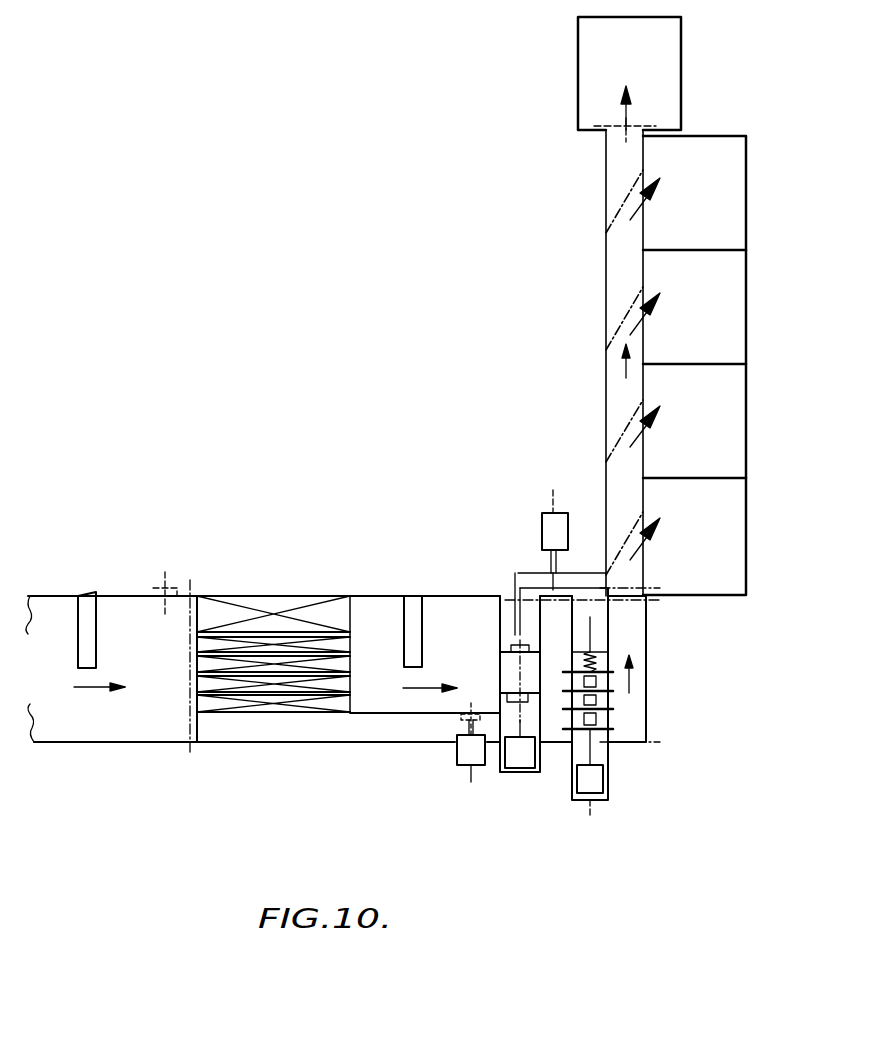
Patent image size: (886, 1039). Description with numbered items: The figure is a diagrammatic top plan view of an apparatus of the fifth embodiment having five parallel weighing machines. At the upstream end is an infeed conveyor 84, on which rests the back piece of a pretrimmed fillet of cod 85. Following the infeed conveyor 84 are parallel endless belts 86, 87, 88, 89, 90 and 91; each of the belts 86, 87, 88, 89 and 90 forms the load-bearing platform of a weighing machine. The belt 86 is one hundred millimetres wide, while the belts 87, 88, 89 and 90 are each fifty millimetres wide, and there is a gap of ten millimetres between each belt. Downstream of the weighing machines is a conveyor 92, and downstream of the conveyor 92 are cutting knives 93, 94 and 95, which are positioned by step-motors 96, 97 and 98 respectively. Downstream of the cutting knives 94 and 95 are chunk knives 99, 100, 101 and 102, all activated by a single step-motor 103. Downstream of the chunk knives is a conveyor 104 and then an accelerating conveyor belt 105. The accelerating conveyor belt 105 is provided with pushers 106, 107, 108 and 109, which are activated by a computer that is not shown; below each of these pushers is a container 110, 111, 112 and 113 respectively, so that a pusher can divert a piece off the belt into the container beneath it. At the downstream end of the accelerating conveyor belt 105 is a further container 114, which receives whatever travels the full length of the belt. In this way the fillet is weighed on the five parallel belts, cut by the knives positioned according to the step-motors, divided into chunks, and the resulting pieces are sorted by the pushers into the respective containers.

The infeed conveyor 84 is at (96, 723).
The pretrimmed fillet of cod 85 is at (84, 608).
The endless belt 86 is at (272, 608).
The endless belt 87 is at (216, 642).
The endless belt 88 is at (212, 664).
The endless belt 89 is at (212, 700).
The endless belt 90 is at (213, 700).
The endless belt 91 is at (362, 728).
The conveyor 92 is at (376, 612).
The cutting knife 93 is at (460, 718).
The cutting knife 94 is at (508, 647).
The cutting knife 95 is at (510, 697).
The step-motor 96 is at (462, 766).
The step-motor 97 is at (540, 535).
The step-motor 98 is at (518, 770).
The chunk knife 99 is at (598, 742).
The chunk knife 100 is at (598, 712).
The chunk knife 101 is at (600, 692).
The chunk knife 102 is at (600, 655).
The step-motor 103 is at (598, 795).
The conveyor 104 is at (632, 618).
The accelerating conveyor belt 105 is at (612, 375).
The pusher 106 is at (632, 525).
The pusher 107 is at (616, 450).
The pusher 108 is at (620, 332).
The pusher 109 is at (618, 216).
The container 110 is at (714, 552).
The container 111 is at (714, 440).
The container 112 is at (714, 335).
The container 113 is at (714, 219).
The further container 114 is at (666, 62).